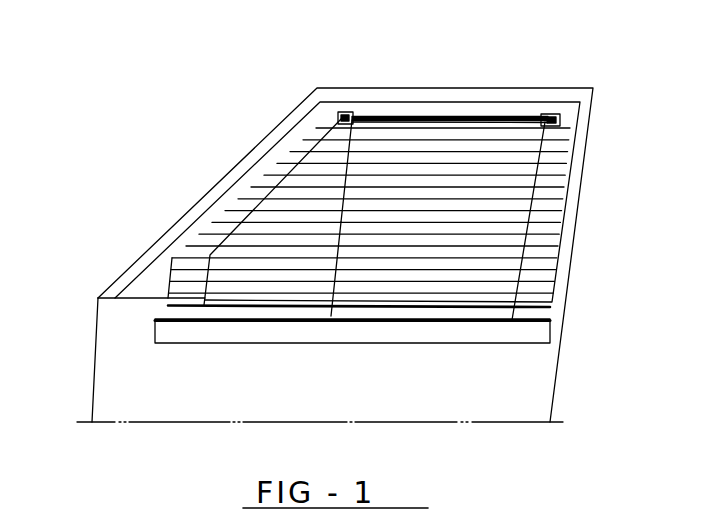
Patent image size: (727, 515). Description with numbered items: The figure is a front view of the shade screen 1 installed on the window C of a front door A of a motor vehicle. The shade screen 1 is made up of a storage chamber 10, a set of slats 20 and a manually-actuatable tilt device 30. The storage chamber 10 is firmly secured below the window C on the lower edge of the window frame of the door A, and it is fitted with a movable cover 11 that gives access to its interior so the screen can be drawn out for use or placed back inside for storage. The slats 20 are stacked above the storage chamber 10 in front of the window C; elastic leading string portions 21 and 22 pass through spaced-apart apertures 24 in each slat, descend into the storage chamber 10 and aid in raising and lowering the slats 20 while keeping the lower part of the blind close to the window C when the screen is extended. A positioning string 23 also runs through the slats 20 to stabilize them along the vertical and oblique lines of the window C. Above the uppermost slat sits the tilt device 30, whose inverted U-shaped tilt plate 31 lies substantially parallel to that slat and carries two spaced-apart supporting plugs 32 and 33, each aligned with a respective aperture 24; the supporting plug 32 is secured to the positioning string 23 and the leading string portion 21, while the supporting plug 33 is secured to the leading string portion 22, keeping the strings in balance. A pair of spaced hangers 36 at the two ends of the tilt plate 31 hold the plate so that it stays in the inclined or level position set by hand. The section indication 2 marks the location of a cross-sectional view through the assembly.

The shade screen 1 is at (556, 268).
The section line II-II 2 is at (312, 330).
The storage chamber 10 is at (293, 335).
The movable cover 11 is at (249, 322).
The slats 20 is at (545, 254).
The leading string portion 21 is at (346, 182).
The leading string portion 22 is at (530, 197).
The positioning string 23 is at (292, 182).
The apertures 24 is at (337, 228).
The manually-actuatable tilt device 30 is at (498, 109).
The tilt plate 31 is at (452, 120).
The supporting plug 32 is at (352, 116).
The supporting plug 33 is at (544, 116).
The hangers 36 is at (343, 117).
The door A is at (128, 358).
The window C is at (323, 122).